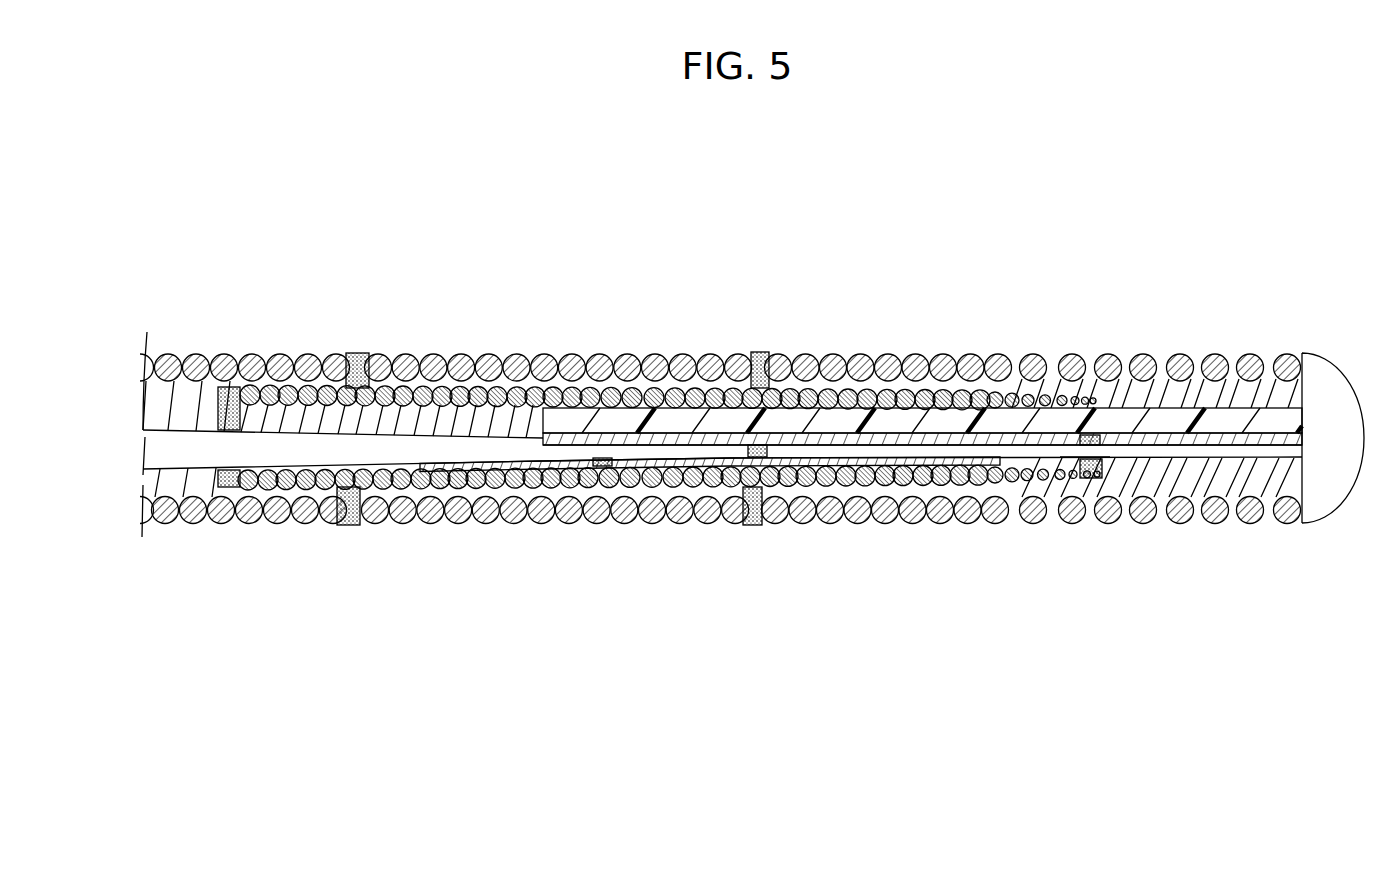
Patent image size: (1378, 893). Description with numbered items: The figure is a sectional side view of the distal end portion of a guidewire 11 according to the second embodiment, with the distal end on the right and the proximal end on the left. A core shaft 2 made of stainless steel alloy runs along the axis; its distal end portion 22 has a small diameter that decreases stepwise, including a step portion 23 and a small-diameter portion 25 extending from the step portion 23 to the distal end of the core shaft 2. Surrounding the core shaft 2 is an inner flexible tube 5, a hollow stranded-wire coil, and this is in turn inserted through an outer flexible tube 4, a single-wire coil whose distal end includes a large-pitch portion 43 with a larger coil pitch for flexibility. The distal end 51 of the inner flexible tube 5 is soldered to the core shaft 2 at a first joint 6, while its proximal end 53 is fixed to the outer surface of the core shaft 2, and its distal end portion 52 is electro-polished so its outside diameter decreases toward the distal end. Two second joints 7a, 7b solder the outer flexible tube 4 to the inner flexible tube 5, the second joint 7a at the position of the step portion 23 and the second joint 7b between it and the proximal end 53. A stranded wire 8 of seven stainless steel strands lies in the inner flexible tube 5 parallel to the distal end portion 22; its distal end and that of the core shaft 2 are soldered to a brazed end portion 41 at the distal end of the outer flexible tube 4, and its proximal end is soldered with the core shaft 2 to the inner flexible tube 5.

The core shaft 2 is at (195, 460).
The outer flexible tube 4 is at (857, 354).
The inner flexible tube 5 is at (832, 525).
The first joint 6 is at (1103, 463).
The second joint 7a is at (747, 527).
The second joint 7b is at (349, 527).
The stranded wire 8 is at (1195, 408).
The guidewire 11 is at (1276, 270).
The distal end portion 22 is at (482, 420).
The step portion 23 is at (752, 352).
The small-diameter portion 25 is at (1040, 452).
The brazed end portion 41 is at (1318, 388).
The large-pitch portion 43 is at (1228, 546).
The distal end 51 is at (1091, 480).
The distal end portion 52 is at (1006, 498).
The proximal end 53 is at (246, 500).